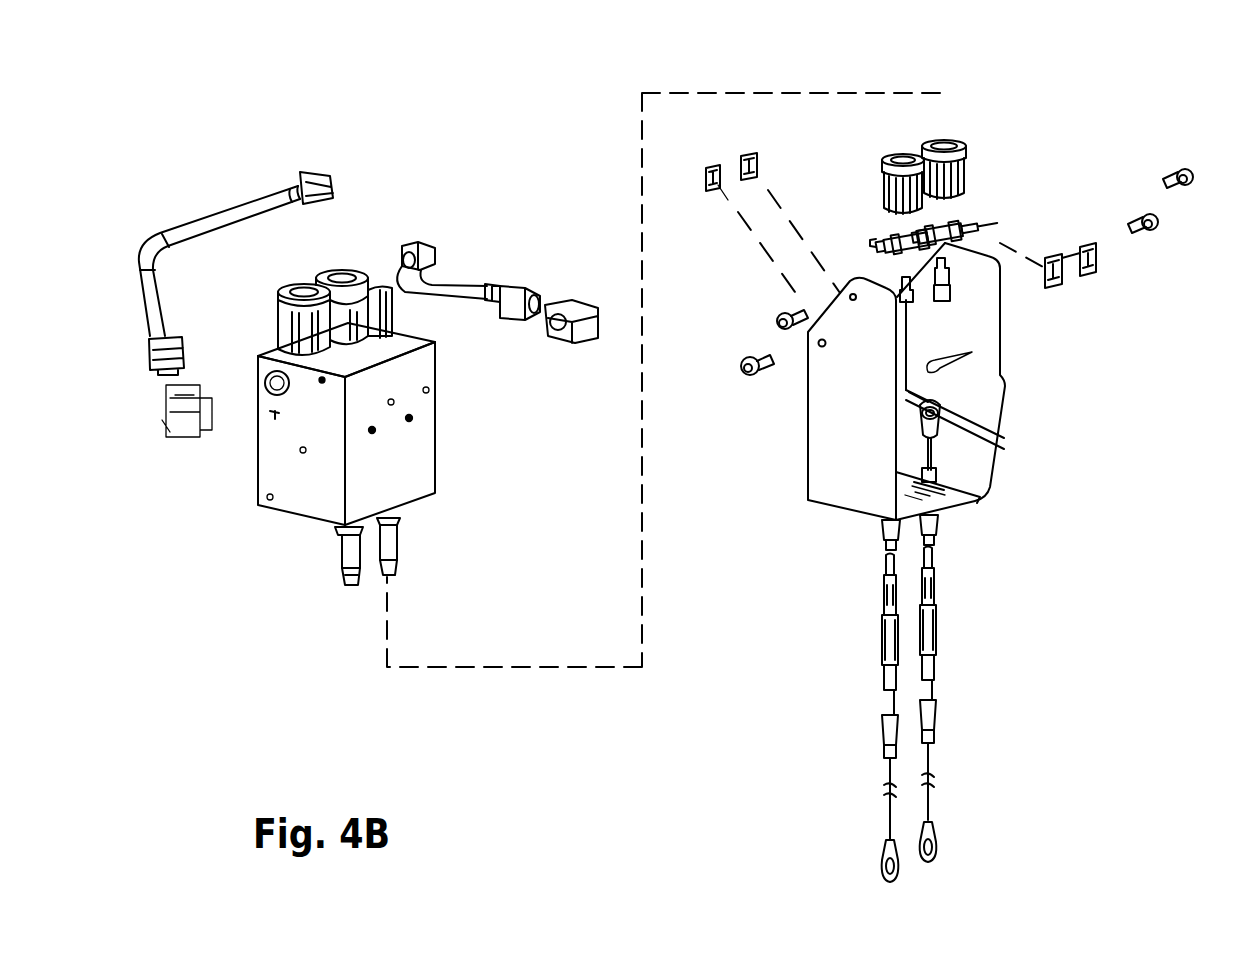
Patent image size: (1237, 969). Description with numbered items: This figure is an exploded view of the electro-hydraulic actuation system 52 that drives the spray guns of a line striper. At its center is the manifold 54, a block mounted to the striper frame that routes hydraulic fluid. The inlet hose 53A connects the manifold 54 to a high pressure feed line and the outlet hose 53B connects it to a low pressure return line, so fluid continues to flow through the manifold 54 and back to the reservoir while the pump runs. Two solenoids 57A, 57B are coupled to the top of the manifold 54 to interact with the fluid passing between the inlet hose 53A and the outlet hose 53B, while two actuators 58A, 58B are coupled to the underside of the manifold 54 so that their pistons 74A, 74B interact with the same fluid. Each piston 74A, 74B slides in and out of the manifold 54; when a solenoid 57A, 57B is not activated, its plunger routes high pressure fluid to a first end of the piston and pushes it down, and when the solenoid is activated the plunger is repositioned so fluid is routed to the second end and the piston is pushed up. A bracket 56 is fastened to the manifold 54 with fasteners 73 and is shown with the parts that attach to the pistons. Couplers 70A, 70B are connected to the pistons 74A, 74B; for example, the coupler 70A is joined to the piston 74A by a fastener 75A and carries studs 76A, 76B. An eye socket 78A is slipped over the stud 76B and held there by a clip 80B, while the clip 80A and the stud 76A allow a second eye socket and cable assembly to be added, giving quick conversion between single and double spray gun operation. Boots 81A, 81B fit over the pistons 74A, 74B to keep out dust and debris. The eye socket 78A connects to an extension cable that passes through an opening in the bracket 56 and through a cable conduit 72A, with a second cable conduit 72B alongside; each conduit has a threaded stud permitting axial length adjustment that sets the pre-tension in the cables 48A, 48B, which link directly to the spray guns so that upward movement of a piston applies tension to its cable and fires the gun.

The cable 48A is at (933, 800).
The cable 48B is at (893, 820).
The electro-hydraulic actuation system 52 is at (233, 554).
The inlet hose 53A is at (452, 282).
The outlet hose 53B is at (245, 205).
The manifold 54 is at (428, 441).
The bracket 56 is at (825, 460).
The solenoid 57A is at (365, 274).
The solenoid 57B is at (286, 291).
The actuator 58A is at (405, 512).
The actuator 58B is at (345, 530).
The coupler 70A is at (950, 228).
The coupler 70B is at (884, 240).
The cable conduit 72A is at (938, 640).
The cable conduit 72B is at (884, 650).
The fastener 73 is at (1182, 190).
The piston 74A is at (398, 542).
The piston 74B is at (350, 556).
The fastener 75A is at (948, 278).
The stud 76A is at (962, 236).
The stud 76B is at (905, 237).
The eye socket 78A is at (1004, 440).
The clip 80A is at (1095, 265).
The clip 80B is at (752, 158).
The boot 81A is at (944, 150).
The boot 81B is at (903, 165).